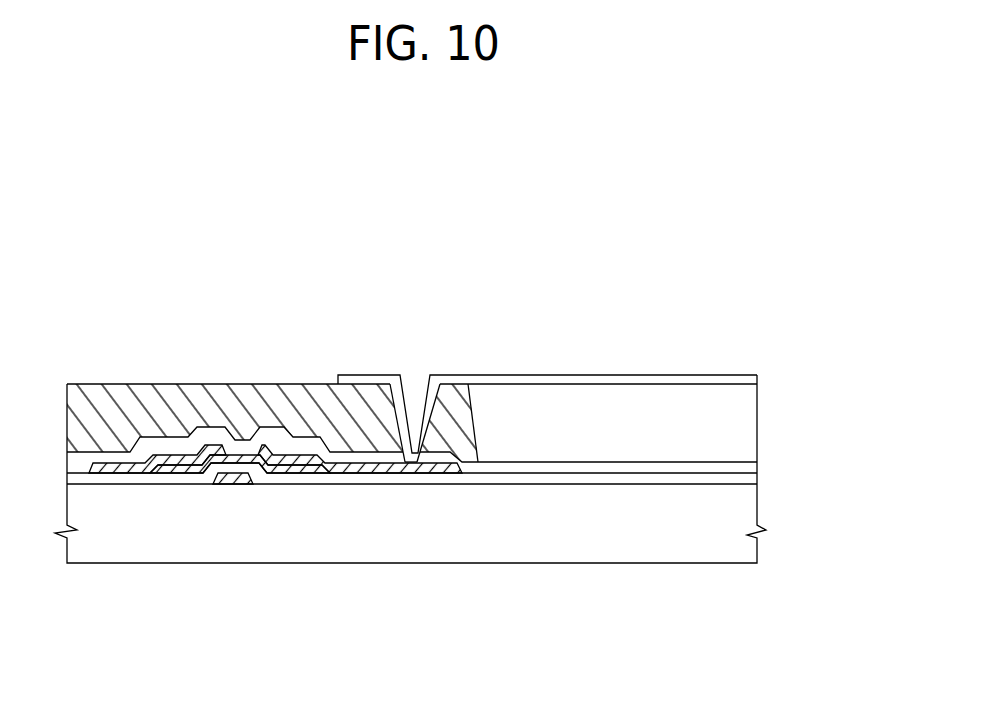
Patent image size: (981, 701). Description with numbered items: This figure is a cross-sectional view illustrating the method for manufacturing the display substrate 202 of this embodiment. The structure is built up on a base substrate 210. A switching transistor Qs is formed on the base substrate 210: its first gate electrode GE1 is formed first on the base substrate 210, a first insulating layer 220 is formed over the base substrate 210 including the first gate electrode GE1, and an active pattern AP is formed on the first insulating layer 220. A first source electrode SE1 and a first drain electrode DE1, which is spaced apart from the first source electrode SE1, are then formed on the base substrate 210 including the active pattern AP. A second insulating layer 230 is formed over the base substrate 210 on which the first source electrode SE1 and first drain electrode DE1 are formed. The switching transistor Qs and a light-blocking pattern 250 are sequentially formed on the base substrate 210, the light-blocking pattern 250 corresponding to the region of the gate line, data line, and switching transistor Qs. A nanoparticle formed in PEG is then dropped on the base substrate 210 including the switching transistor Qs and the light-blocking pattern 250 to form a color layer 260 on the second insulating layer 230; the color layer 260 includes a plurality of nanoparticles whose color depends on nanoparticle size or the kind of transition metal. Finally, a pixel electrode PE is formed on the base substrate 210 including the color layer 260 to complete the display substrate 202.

The display substrate 202 is at (417, 160).
The base substrate 210 is at (750, 548).
The first insulating layer 220 is at (748, 477).
The second insulating layer 230 is at (748, 465).
The light-blocking pattern 250 is at (452, 415).
The color layer 260 is at (748, 427).
The pixel electrode PE is at (748, 378).
The first source electrode SE1 is at (182, 455).
The first gate electrode GE1 is at (238, 478).
The first drain electrode DE1 is at (292, 456).
The active pattern AP is at (308, 468).
The switching transistor Qs is at (275, 552).